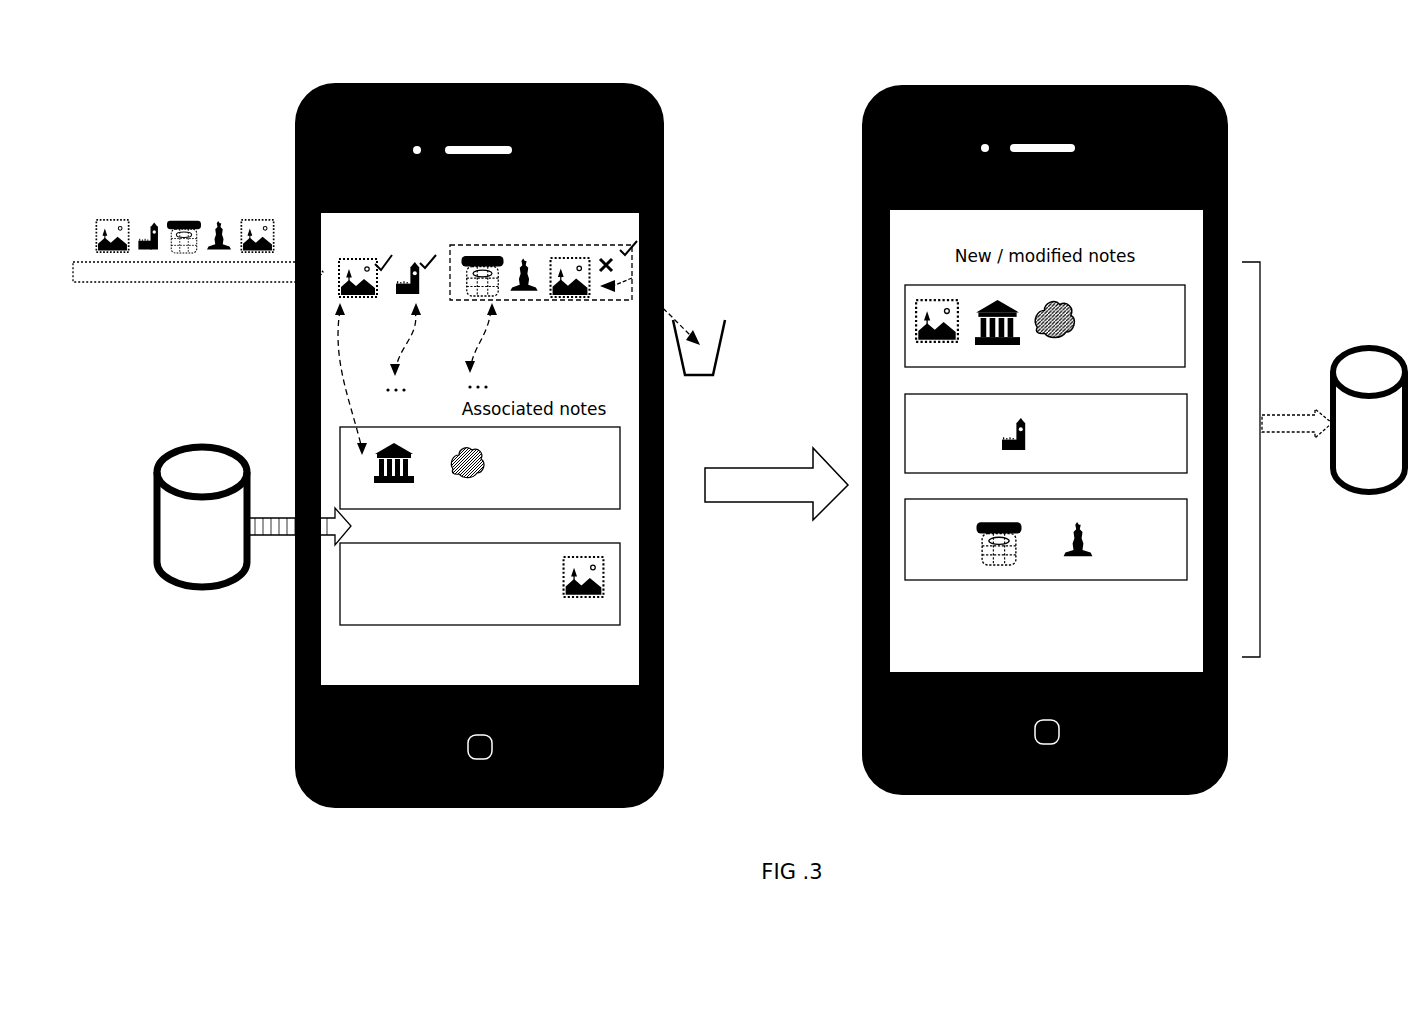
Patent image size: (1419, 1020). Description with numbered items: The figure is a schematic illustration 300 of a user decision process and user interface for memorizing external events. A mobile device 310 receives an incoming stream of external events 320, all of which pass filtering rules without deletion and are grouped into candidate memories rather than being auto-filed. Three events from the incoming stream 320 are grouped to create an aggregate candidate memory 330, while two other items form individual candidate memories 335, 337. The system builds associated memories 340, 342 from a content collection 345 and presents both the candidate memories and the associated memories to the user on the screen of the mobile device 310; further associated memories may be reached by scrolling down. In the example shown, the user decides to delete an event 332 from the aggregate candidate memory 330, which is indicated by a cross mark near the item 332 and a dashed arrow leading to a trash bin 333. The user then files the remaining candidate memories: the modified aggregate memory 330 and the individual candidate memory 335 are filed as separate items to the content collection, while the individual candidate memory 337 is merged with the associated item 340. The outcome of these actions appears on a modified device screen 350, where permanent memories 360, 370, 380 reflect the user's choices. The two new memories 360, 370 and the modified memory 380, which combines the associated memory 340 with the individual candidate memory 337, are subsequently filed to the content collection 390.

The schematic illustration 300 is at (1340, 143).
The mobile device 310 is at (290, 151).
The incoming stream of external events 320 is at (139, 215).
The aggregate candidate memory 330 is at (632, 278).
The event 332 is at (575, 300).
The trash bin 333 is at (699, 325).
The individual candidate memory 335 is at (407, 258).
The individual candidate memory 337 is at (332, 291).
The associated memory 340 is at (600, 488).
The associated memory 342 is at (610, 608).
The content collection 345 is at (212, 592).
The modified device screen 350 is at (848, 151).
The permanent memory 360 is at (1147, 517).
The permanent memory 370 is at (1135, 442).
The modified memory 380 is at (1172, 300).
The content collection 390 is at (1355, 346).